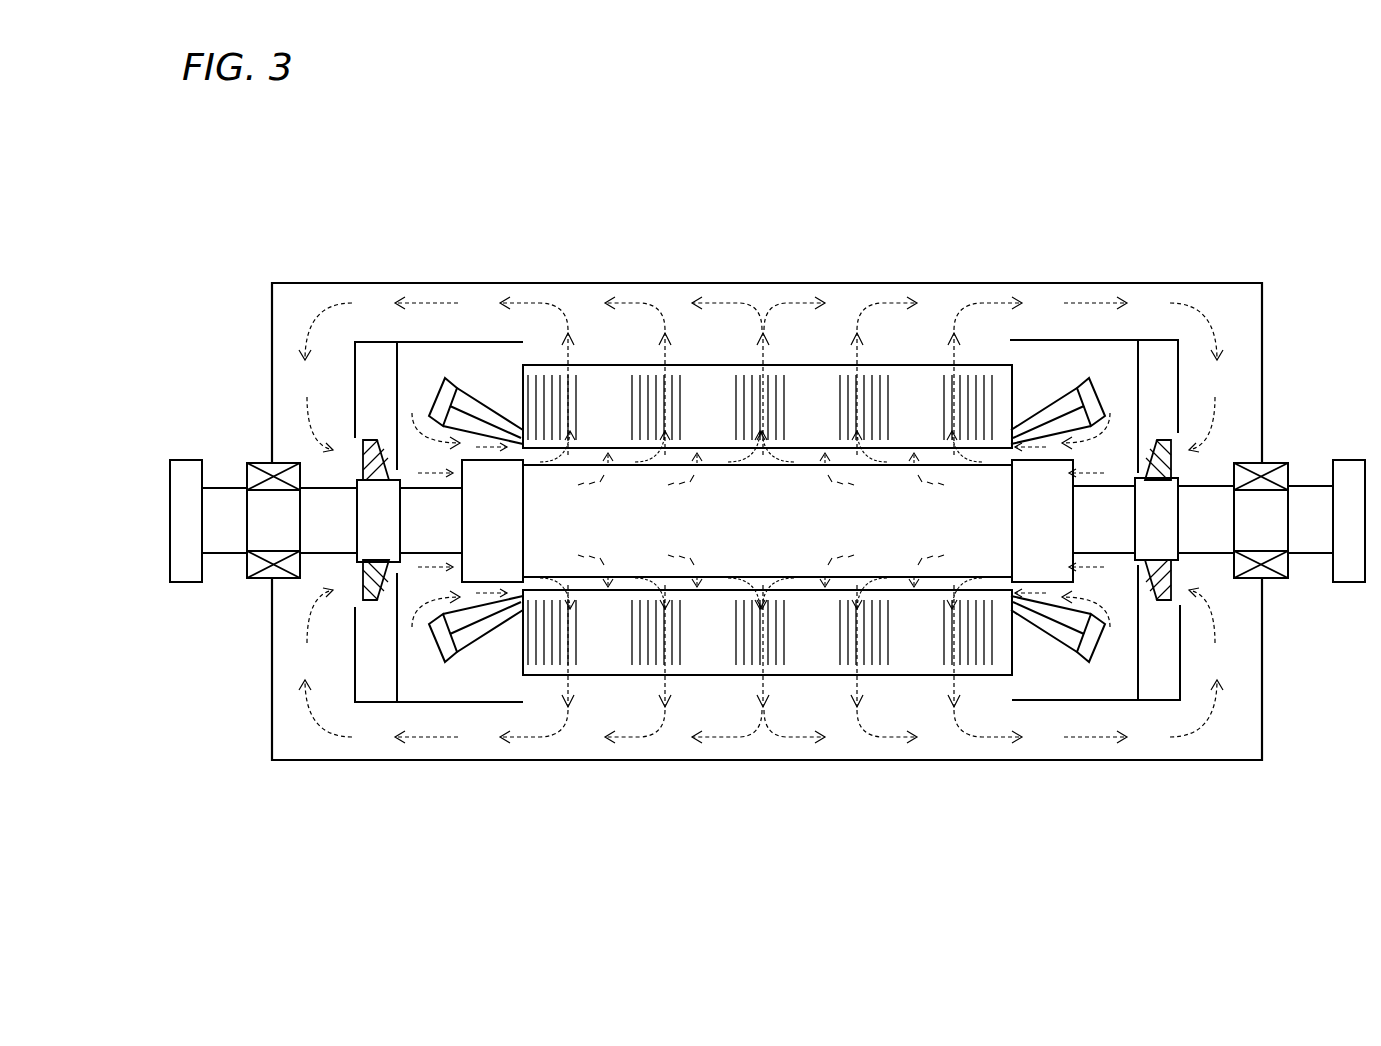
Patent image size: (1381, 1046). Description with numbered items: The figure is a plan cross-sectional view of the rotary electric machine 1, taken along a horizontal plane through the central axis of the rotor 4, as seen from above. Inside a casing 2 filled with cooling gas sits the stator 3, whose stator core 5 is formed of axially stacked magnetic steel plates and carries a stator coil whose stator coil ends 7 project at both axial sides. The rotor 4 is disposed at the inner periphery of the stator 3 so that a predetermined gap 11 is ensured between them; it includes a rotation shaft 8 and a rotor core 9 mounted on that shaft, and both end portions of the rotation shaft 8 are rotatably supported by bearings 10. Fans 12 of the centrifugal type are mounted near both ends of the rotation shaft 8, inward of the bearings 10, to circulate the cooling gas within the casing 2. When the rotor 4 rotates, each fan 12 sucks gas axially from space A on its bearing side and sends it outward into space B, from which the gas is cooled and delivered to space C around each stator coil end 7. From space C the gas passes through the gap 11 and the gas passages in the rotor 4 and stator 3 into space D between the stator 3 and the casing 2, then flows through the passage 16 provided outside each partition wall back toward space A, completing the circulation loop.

The rotary electric machine 1 is at (937, 195).
The casing 2 is at (500, 282).
The stator 3 is at (695, 392).
The rotor 4 is at (813, 543).
The stator core 5 is at (827, 363).
The stator coil end 7 is at (455, 660).
The rotation shaft 8 is at (1125, 537).
The rotor core 9 is at (910, 605).
The bearing 10 is at (250, 565).
The gap 11 is at (713, 580).
The fan 12 is at (377, 443).
The passage 16 is at (477, 312).